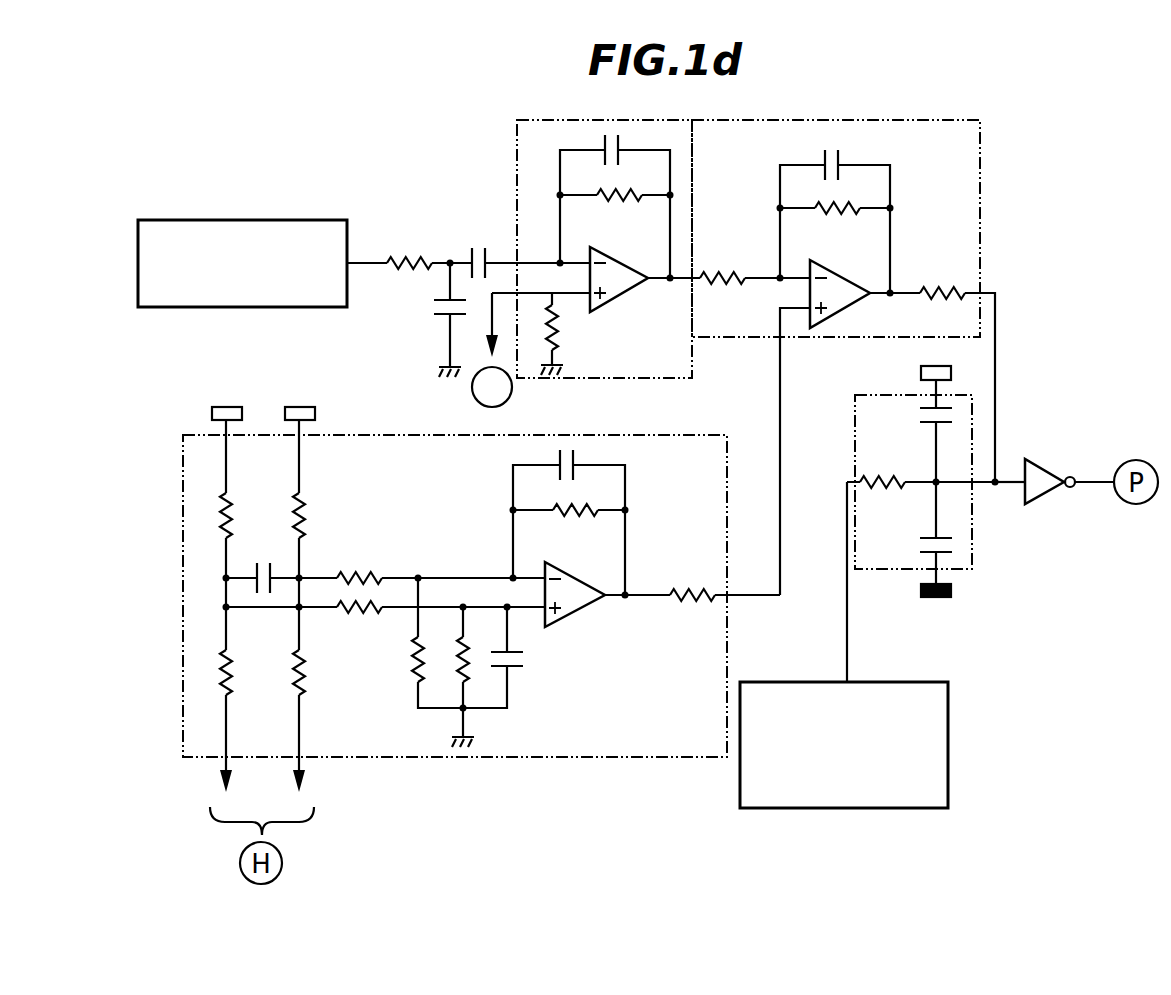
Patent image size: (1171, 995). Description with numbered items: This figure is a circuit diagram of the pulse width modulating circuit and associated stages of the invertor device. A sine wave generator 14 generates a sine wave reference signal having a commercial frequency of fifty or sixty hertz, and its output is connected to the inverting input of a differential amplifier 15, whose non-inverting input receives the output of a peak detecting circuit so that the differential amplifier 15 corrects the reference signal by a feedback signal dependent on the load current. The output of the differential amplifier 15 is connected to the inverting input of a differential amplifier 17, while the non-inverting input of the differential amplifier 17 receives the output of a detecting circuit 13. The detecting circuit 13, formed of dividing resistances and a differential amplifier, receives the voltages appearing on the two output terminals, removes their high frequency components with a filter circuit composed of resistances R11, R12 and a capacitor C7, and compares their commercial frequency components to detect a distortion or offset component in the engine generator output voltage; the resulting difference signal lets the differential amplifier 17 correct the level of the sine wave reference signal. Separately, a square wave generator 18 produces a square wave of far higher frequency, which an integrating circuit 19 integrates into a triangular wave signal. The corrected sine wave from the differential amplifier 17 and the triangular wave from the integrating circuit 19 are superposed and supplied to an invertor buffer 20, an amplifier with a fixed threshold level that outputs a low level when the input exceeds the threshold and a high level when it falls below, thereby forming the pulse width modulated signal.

The detecting circuit 13 is at (481, 581).
The sine wave generator 14 is at (235, 220).
The differential amplifier 15 is at (515, 208).
The differential amplifier 17 is at (982, 180).
The square wave generator 18 is at (948, 748).
The integrating circuit 19 is at (978, 544).
The invertor buffer 20 is at (1033, 501).
The capacitor C7 is at (262, 560).
The resistance R11 is at (255, 672).
The resistance R12 is at (330, 672).